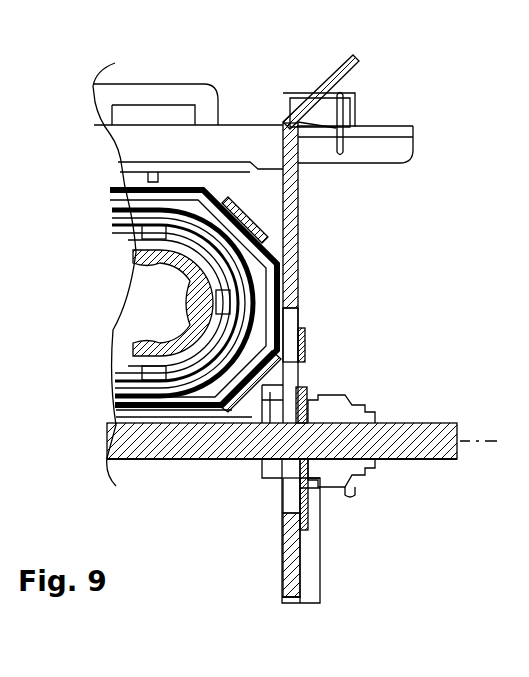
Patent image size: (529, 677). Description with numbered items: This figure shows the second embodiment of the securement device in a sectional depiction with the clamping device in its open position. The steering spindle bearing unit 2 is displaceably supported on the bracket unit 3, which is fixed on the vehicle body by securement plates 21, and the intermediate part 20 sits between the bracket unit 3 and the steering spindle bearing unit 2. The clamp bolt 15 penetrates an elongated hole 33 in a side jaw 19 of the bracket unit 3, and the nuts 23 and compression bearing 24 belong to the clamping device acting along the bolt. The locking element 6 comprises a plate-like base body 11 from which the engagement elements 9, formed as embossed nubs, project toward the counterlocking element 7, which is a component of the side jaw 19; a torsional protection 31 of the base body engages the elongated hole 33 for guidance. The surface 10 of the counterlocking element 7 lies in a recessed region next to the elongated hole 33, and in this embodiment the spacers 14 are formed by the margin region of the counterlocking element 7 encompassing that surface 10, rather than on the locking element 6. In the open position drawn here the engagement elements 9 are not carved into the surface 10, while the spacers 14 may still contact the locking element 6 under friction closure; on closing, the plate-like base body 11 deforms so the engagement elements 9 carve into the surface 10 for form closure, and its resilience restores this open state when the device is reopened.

The steering spindle bearing unit 2 is at (256, 252).
The bracket unit 3 is at (228, 130).
The locking element 6 is at (300, 497).
The counterlocking element 7 is at (290, 493).
The engagement elements 9 is at (300, 420).
The surface 10 is at (307, 365).
The plate-like base body 11 is at (307, 510).
The spacers 14 is at (183, 328).
The clamp bolt 15 is at (445, 425).
The side jaws 19 is at (283, 592).
The intermediate part 20 is at (237, 213).
The securement plates 21 is at (323, 80).
The nuts 23 is at (358, 408).
The compression bearing 24 is at (342, 478).
The torsional protection 31 is at (196, 462).
The elongated holes 33 is at (298, 308).